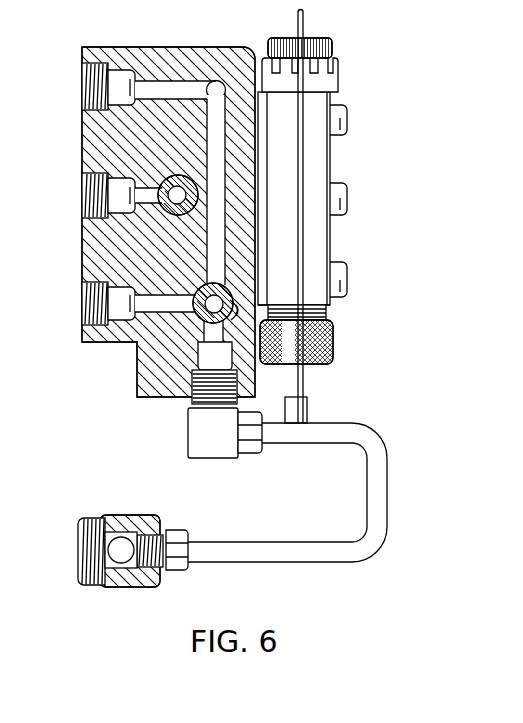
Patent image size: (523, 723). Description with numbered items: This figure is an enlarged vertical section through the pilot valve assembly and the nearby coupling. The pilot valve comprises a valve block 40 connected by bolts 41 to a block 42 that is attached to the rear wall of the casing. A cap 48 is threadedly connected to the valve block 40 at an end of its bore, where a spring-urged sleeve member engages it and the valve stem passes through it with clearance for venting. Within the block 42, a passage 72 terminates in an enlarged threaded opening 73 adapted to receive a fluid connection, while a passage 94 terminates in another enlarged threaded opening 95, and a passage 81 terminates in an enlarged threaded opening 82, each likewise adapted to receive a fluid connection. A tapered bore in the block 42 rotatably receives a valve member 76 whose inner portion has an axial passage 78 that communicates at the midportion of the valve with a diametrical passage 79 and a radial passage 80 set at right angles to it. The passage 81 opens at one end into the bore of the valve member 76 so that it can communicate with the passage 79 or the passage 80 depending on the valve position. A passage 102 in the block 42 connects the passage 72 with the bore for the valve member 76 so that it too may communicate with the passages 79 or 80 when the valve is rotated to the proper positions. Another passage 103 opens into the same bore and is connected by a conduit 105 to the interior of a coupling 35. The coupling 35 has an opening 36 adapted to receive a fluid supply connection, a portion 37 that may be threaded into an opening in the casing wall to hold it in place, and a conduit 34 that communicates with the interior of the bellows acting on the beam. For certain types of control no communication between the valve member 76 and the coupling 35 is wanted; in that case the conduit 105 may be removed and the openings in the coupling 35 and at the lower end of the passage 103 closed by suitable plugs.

The block 42 is at (173, 47).
The enlarged threaded opening 73 is at (87, 92).
The passage 72 is at (178, 92).
The passage 102 is at (212, 150).
The enlarged threaded opening 95 is at (87, 206).
The passage 94 is at (150, 204).
The enlarged threaded opening 82 is at (87, 314).
The passage 81 is at (151, 298).
The axial passage 78 is at (205, 296).
The valve member 76 is at (228, 292).
The diametrical passage 79 is at (232, 312).
The radial passage 80 is at (203, 326).
The passage 103 is at (214, 373).
The valve block 40 is at (330, 165).
The bolts 41 is at (345, 275).
The cap 48 is at (333, 350).
The conduit 105 is at (333, 540).
The coupling 35 is at (140, 514).
The threaded portion 37 is at (90, 516).
The opening 36 is at (85, 556).
The conduit 34 is at (120, 558).